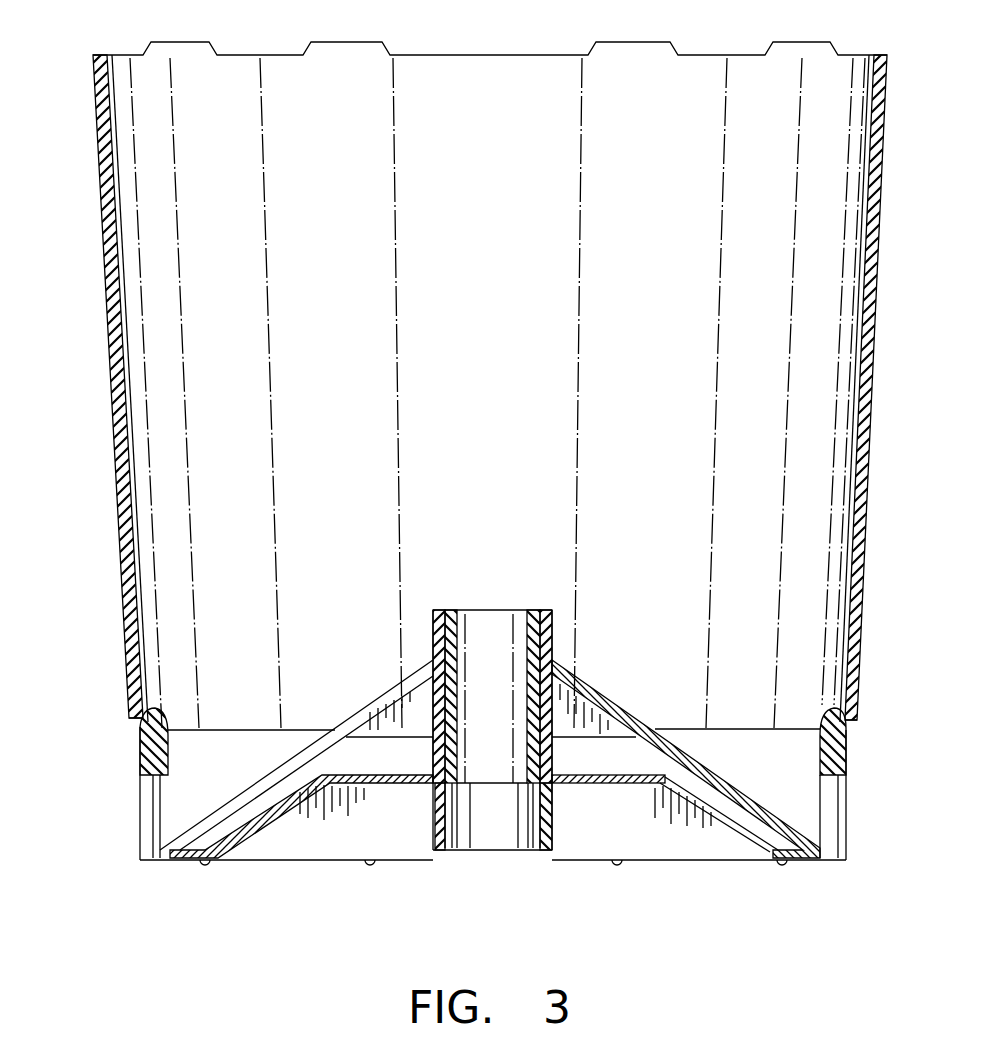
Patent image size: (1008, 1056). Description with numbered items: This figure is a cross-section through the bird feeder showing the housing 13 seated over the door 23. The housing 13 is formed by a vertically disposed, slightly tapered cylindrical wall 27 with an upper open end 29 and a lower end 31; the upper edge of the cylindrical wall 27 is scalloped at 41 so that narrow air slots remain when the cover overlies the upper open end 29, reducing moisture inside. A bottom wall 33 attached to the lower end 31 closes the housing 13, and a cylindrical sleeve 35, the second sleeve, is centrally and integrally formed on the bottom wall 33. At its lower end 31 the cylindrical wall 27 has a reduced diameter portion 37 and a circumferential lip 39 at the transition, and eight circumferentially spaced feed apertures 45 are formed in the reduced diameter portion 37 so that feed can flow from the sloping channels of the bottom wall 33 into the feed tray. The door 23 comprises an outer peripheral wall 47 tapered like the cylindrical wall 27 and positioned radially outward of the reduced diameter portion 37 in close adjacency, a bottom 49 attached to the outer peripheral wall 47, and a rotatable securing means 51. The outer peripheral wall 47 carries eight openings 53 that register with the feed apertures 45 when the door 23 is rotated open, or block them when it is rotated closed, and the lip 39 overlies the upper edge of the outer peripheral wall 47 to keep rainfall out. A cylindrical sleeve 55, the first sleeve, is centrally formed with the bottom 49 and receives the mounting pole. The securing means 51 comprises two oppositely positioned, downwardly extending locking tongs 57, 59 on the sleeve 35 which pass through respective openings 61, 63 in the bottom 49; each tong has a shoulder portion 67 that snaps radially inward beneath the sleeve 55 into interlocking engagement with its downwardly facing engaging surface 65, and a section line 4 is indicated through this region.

The section line 4- 4 is at (392, 808).
The housing 13 is at (472, 367).
The door 23 is at (487, 821).
The cylindrical wall 27 is at (878, 205).
The upper open end 29 is at (94, 80).
The lower end 31 is at (120, 598).
The bottom wall 33 is at (388, 703).
The cylindrical sleeve 35 is at (553, 620).
The reduced diameter portion 37 is at (846, 745).
The circumferential lip 39 is at (137, 728).
The scalloped upper edge 41 is at (265, 55).
The feed apertures 45 is at (172, 797).
The outer peripheral wall 47 is at (142, 746).
The bottom 49 is at (265, 850).
The rotatable securing means 51 is at (449, 862).
The openings 53 is at (152, 793).
The cylindrical sleeve 55 is at (492, 734).
The locking tong 57 is at (433, 802).
The locking tong 59 is at (552, 802).
The opening 61 is at (430, 773).
The opening 63 is at (556, 773).
The engaging surface 65 is at (528, 768).
The shoulder portion 67 is at (442, 808).